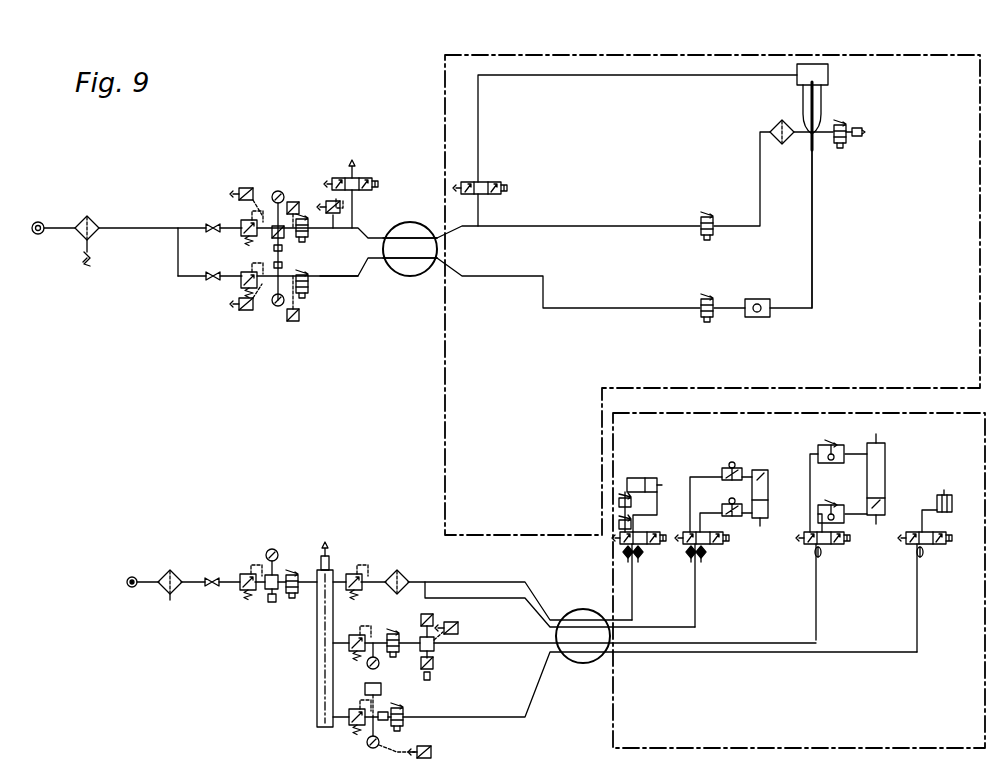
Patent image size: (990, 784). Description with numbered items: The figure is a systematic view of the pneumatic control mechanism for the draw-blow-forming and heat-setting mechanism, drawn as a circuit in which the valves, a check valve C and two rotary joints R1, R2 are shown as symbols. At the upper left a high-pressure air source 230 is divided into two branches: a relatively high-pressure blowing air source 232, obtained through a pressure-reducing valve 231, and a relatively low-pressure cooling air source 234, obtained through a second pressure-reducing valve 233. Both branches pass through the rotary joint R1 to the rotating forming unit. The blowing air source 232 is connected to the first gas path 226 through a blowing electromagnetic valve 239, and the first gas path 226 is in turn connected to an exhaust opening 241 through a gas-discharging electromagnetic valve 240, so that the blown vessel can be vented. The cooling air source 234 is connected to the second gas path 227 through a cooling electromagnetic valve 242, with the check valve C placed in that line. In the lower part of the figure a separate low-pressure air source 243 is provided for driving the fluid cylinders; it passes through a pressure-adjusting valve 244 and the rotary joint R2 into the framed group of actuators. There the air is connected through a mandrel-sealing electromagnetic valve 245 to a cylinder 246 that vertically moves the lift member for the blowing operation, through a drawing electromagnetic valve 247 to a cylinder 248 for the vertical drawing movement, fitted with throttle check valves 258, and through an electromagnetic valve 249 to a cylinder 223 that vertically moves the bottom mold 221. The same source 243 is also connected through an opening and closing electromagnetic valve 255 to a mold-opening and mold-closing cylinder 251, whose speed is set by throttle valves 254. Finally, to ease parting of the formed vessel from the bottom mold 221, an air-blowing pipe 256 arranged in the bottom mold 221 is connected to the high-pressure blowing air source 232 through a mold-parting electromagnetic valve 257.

The bottom mold 221 is at (830, 76).
The cylinder for vertically moving the bottom mold 223 is at (760, 470).
The first gas path 226 is at (796, 137).
The second gas path 227 is at (814, 200).
The high-pressure air source 230 is at (38, 221).
The pressure-reducing valve 231 is at (240, 222).
The high-pressure blowing air source 232 is at (362, 230).
The pressure-reducing valve 233 is at (238, 283).
The low-pressure cooling air source 234 is at (343, 279).
The blowing electromagnetic valve 239 is at (701, 220).
The gas-discharging electromagnetic valve 240 is at (845, 124).
The exhaust opening 241 is at (860, 136).
The cooling electromagnetic valve 242 is at (701, 303).
The low-pressure air source 243 is at (132, 577).
The pressure-adjusting valve 244 is at (238, 590).
The mandrel-sealing electromagnetic valve 245 is at (932, 546).
The cylinder for vertically moving the lift member 246 is at (945, 494).
The drawing electromagnetic valve 247 is at (832, 546).
The cylinder for vertically moving the drawing rod 248 is at (885, 468).
The electromagnetic valve for the bottom mold 249 is at (710, 546).
The mold-opening and mold-closing cylinder 251 is at (649, 478).
The throttle valves 254 is at (622, 497).
The opening and closing electromagnetic valve 255 is at (646, 546).
The air-blowing pipe 256 is at (766, 76).
The mold-parting electromagnetic valve 257 is at (497, 186).
The throttle check valves 258 is at (847, 446).
The check valve C is at (765, 300).
The rotary joint R1 is at (415, 278).
The rotary joint R2 is at (598, 662).